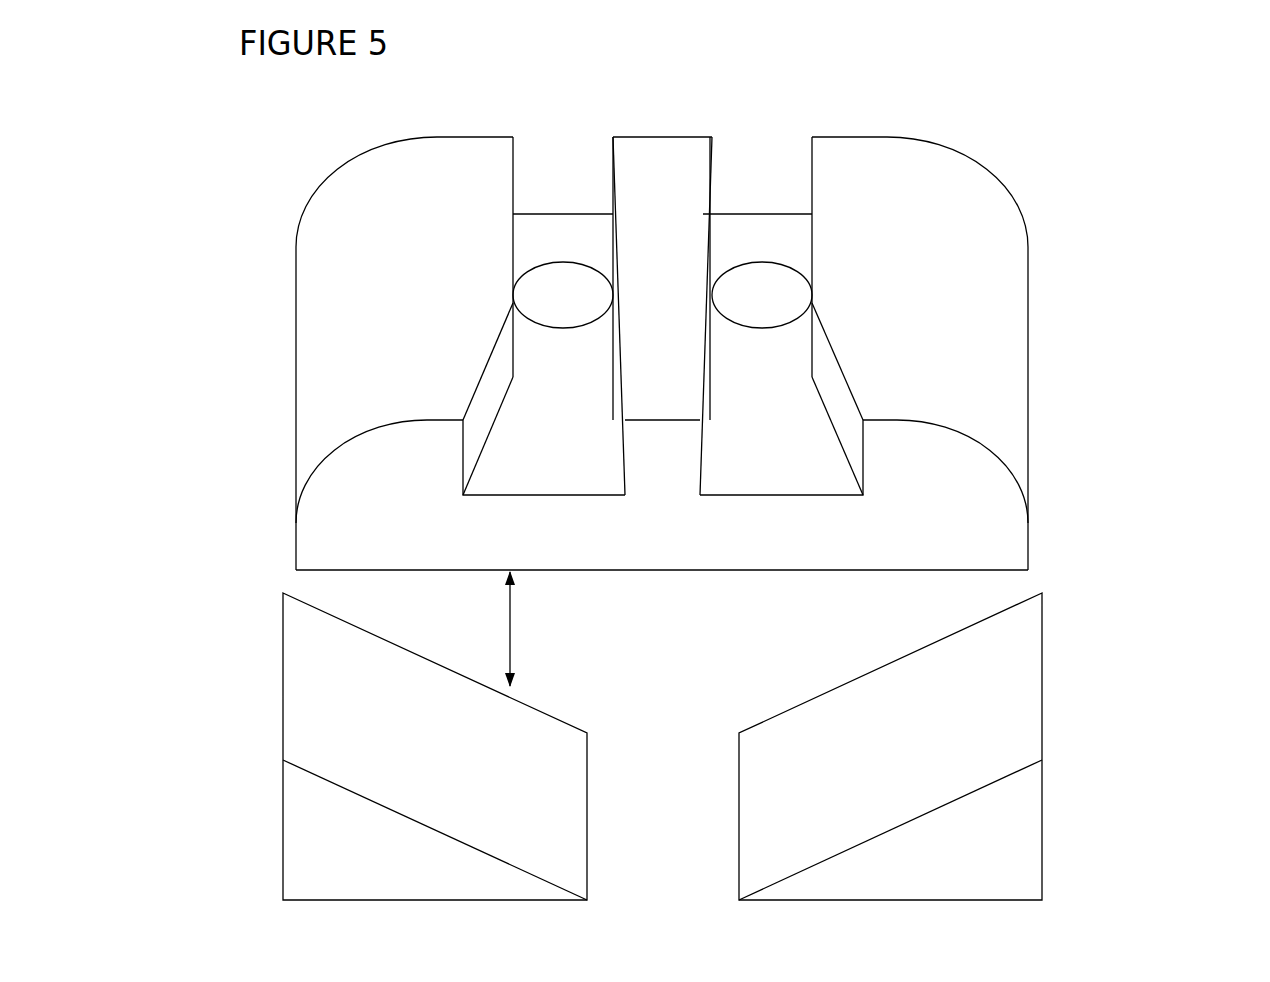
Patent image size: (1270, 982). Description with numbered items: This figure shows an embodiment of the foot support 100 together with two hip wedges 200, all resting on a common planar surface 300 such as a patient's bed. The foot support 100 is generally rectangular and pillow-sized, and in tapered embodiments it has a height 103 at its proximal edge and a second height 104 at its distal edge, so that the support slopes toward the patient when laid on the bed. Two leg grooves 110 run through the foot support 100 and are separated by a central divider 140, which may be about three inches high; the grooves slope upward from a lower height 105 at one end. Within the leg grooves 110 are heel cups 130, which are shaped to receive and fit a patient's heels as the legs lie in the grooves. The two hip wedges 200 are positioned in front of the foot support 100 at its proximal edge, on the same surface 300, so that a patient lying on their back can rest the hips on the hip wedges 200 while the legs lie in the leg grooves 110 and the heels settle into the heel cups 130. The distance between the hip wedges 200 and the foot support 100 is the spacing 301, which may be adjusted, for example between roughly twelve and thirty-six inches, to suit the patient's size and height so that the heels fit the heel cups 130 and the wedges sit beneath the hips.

The foot support 100 is at (270, 367).
The height 103 is at (1053, 487).
The second height 104 is at (306, 252).
The height 105 is at (295, 532).
The leg grooves 110 is at (768, 412).
The heel cups 130 is at (540, 267).
The divider 140 is at (653, 130).
The hip wedges 200 is at (250, 678).
The planar surface 300 is at (1115, 435).
The spacing 301 is at (512, 624).